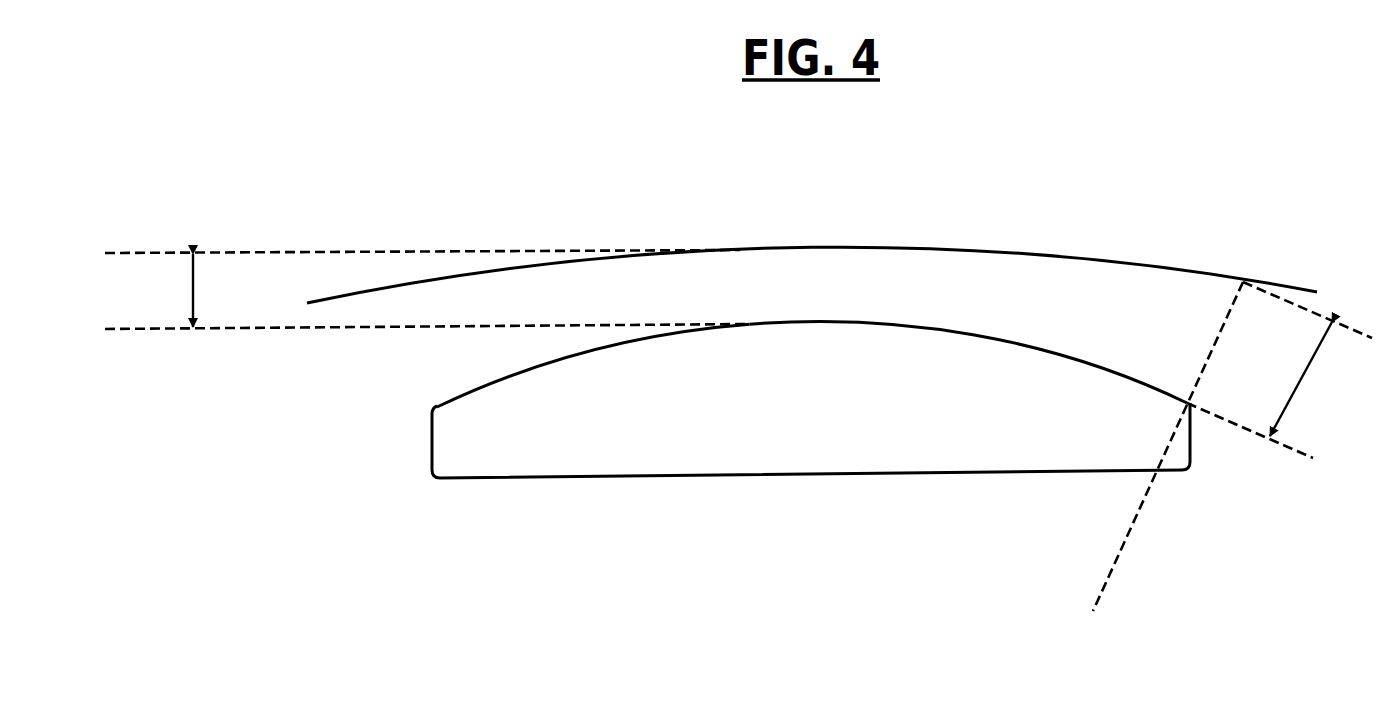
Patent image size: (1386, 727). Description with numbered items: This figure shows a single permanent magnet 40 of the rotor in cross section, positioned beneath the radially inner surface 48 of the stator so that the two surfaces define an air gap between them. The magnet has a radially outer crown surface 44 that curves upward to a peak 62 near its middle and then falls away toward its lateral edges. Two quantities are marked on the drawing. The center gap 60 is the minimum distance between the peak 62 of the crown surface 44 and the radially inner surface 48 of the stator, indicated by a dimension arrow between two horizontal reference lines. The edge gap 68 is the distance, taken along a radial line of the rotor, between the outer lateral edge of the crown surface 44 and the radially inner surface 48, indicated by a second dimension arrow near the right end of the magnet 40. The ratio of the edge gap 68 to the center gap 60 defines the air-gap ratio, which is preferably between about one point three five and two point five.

The permanent magnet 40 is at (750, 425).
The radially outer crown surface 44 is at (647, 342).
The radially inner surface 48 is at (822, 245).
The center gap 60 is at (192, 298).
The peak 62 is at (887, 326).
The edge gap 68 is at (1302, 378).